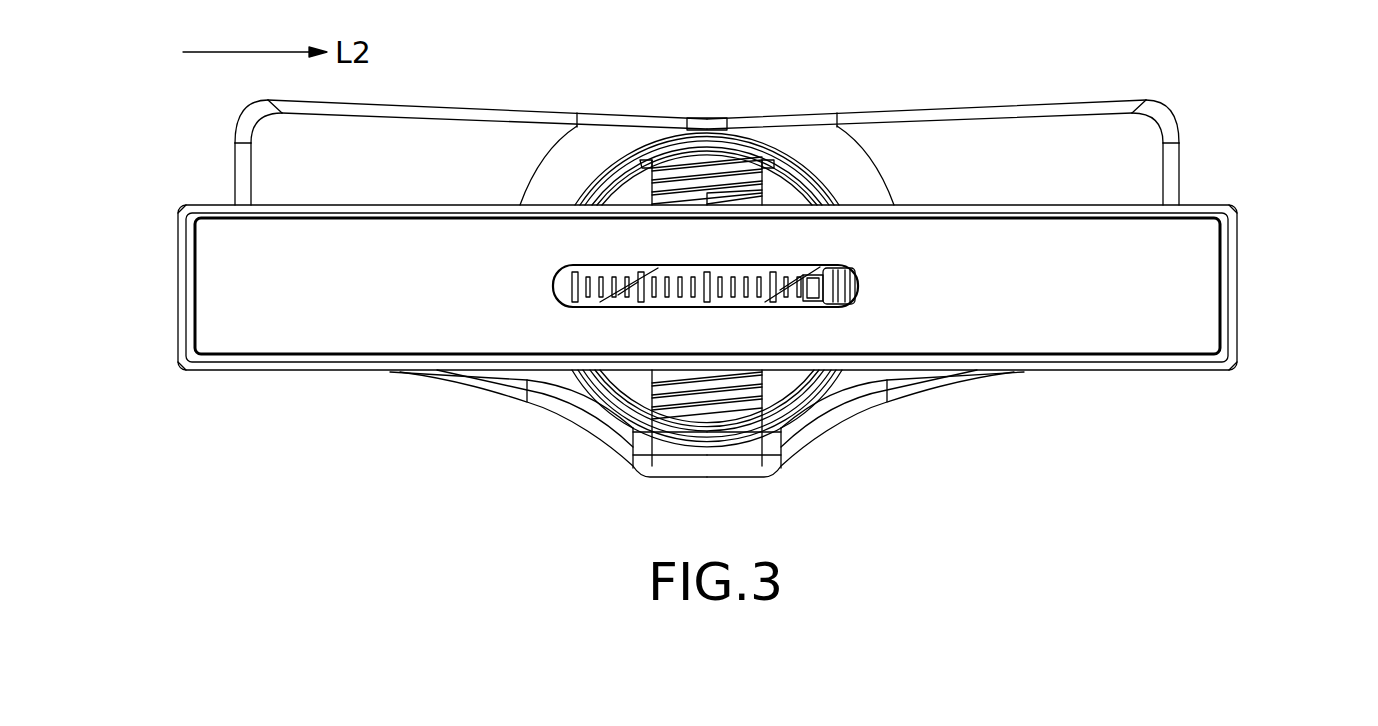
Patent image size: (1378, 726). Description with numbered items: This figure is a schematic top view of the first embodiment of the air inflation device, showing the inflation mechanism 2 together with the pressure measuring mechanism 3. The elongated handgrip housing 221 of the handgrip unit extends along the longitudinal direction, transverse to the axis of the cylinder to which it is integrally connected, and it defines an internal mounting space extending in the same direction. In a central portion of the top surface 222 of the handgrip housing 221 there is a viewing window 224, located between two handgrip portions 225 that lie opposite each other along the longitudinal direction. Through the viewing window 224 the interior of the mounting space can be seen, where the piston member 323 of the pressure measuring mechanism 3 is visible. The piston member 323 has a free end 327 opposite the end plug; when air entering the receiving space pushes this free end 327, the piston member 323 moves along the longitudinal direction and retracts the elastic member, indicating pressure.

The inflation mechanism 2 is at (142, 270).
The handgrip housing 221 is at (1246, 281).
The top surface 222 is at (392, 335).
The viewing window 224 is at (587, 300).
The handgrip portions 225 is at (262, 327).
The pressure measuring mechanism 3 is at (790, 258).
The piston member 323 is at (808, 305).
The free end 327 is at (855, 288).